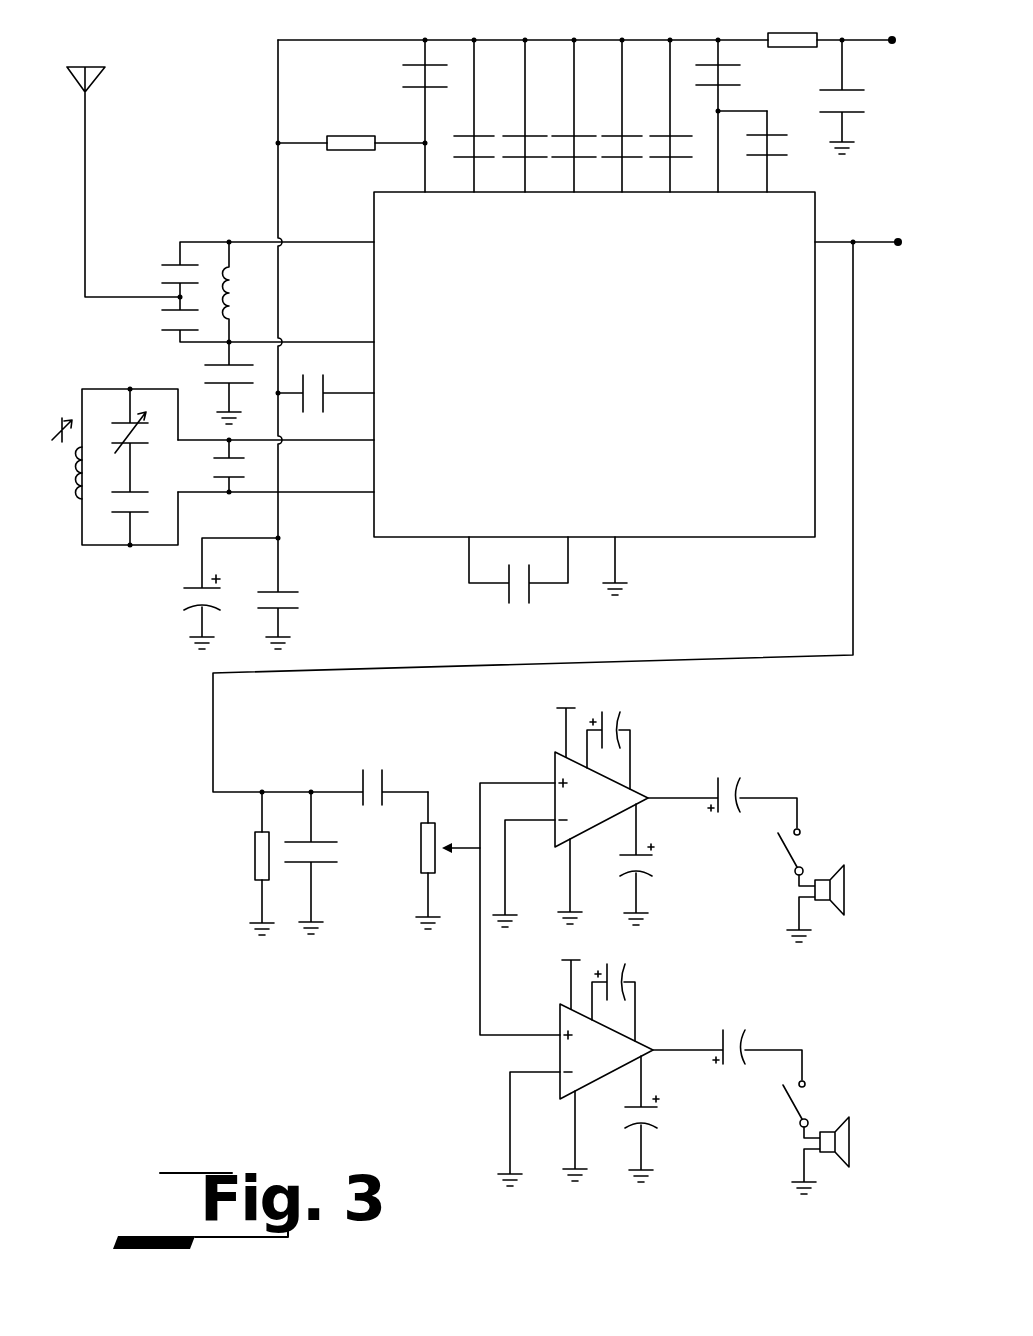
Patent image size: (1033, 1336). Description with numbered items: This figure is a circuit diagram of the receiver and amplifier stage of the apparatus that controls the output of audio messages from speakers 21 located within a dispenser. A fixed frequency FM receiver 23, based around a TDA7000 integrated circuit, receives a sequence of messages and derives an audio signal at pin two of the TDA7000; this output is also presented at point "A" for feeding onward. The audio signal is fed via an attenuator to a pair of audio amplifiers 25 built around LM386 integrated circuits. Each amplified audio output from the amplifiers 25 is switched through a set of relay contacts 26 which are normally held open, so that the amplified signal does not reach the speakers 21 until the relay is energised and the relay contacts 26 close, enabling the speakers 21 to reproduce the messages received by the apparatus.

The fixed frequency FM receiver 23 is at (256, 142).
The audio amplifiers 25 is at (486, 1076).
The relay contacts 26 is at (803, 847).
The speakers 21 is at (845, 912).